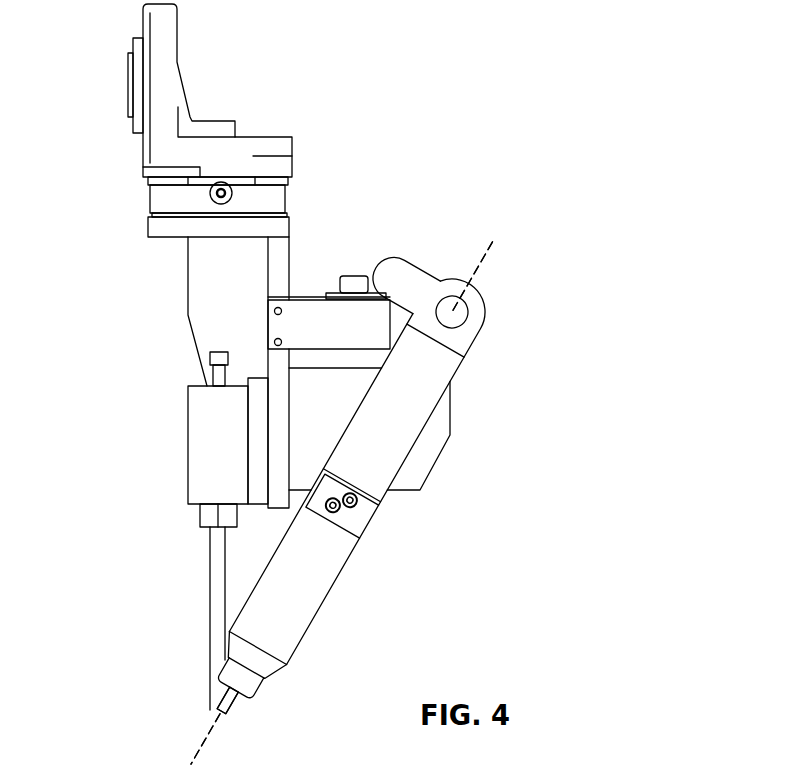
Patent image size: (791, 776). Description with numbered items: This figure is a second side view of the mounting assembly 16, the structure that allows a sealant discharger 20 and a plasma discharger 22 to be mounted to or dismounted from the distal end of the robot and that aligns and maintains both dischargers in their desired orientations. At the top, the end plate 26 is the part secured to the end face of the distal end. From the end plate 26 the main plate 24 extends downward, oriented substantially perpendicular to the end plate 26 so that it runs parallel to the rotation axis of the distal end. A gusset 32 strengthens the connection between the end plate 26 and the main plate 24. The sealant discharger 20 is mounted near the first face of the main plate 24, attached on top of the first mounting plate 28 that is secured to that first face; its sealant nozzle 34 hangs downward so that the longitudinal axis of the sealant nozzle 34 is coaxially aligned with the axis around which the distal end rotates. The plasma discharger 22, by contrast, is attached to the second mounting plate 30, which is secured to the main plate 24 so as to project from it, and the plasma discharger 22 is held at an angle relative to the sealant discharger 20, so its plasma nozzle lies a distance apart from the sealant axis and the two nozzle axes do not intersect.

The mounting assembly 16 is at (397, 48).
The sealant discharger 20 is at (216, 478).
The plasma discharger 22 is at (392, 420).
The main plate 24 is at (277, 268).
The end plate 26 is at (148, 228).
The first mounting plate 28 is at (258, 414).
The second mounting plate 30 is at (417, 472).
The gusset 32 is at (218, 295).
The sealant nozzle 34 is at (217, 607).